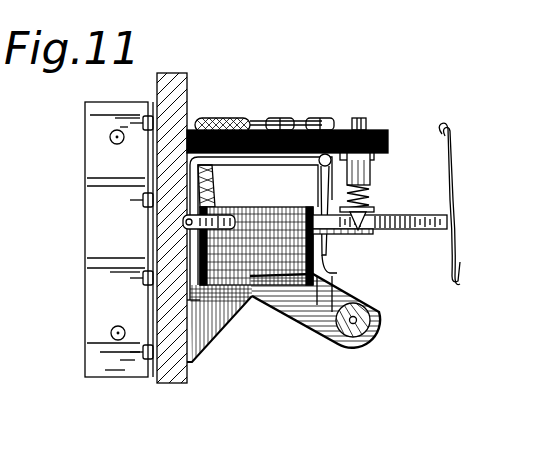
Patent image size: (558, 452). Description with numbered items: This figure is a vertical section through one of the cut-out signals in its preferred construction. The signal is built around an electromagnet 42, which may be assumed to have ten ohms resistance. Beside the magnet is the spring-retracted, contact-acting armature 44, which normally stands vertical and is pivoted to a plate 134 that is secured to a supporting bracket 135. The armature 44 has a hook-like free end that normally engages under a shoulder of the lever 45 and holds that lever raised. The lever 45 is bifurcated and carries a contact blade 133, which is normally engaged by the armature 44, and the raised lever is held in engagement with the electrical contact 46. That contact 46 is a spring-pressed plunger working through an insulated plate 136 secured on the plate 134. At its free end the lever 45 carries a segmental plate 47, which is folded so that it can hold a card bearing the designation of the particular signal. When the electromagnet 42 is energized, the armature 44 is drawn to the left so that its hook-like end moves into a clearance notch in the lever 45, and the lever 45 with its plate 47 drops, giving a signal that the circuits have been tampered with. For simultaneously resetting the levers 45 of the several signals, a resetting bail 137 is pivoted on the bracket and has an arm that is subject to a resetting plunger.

The electromagnet 42 is at (268, 268).
The armature 44 is at (323, 188).
The lever 45 is at (223, 227).
The electrical contact 46 is at (367, 217).
The segmental indicator plate 47 is at (452, 244).
The contact blade 133 is at (364, 236).
The plate 134 is at (190, 196).
The supporting bracket 135 is at (103, 170).
The insulated plate 136 is at (375, 132).
The resetting bail 137 is at (381, 315).